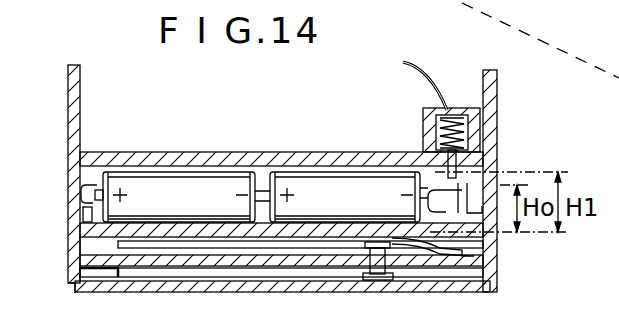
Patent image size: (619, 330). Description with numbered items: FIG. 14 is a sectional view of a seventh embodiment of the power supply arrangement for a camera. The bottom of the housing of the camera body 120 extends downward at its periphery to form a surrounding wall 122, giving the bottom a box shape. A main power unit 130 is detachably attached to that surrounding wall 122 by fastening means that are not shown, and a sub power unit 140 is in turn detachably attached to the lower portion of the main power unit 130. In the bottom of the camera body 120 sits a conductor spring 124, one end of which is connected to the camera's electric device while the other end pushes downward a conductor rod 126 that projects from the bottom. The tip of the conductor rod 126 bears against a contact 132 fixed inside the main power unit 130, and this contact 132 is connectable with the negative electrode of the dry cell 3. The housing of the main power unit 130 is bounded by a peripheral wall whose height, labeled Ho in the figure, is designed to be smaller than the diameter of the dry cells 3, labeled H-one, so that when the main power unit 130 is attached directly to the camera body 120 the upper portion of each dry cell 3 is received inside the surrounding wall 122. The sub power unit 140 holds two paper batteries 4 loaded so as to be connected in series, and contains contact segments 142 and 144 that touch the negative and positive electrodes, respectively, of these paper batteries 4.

The camera body 120 is at (62, 134).
The surrounding wall 122 is at (70, 158).
The dry cell 3 is at (200, 172).
The paper battery 4 is at (138, 250).
The main power unit 130 is at (64, 197).
The contact 132 is at (488, 242).
The conductor spring 124 is at (440, 125).
The conductor rod 126 is at (445, 178).
The sub power unit 140 is at (60, 247).
The contact segment 142 is at (446, 254).
The contact segment 144 is at (418, 274).